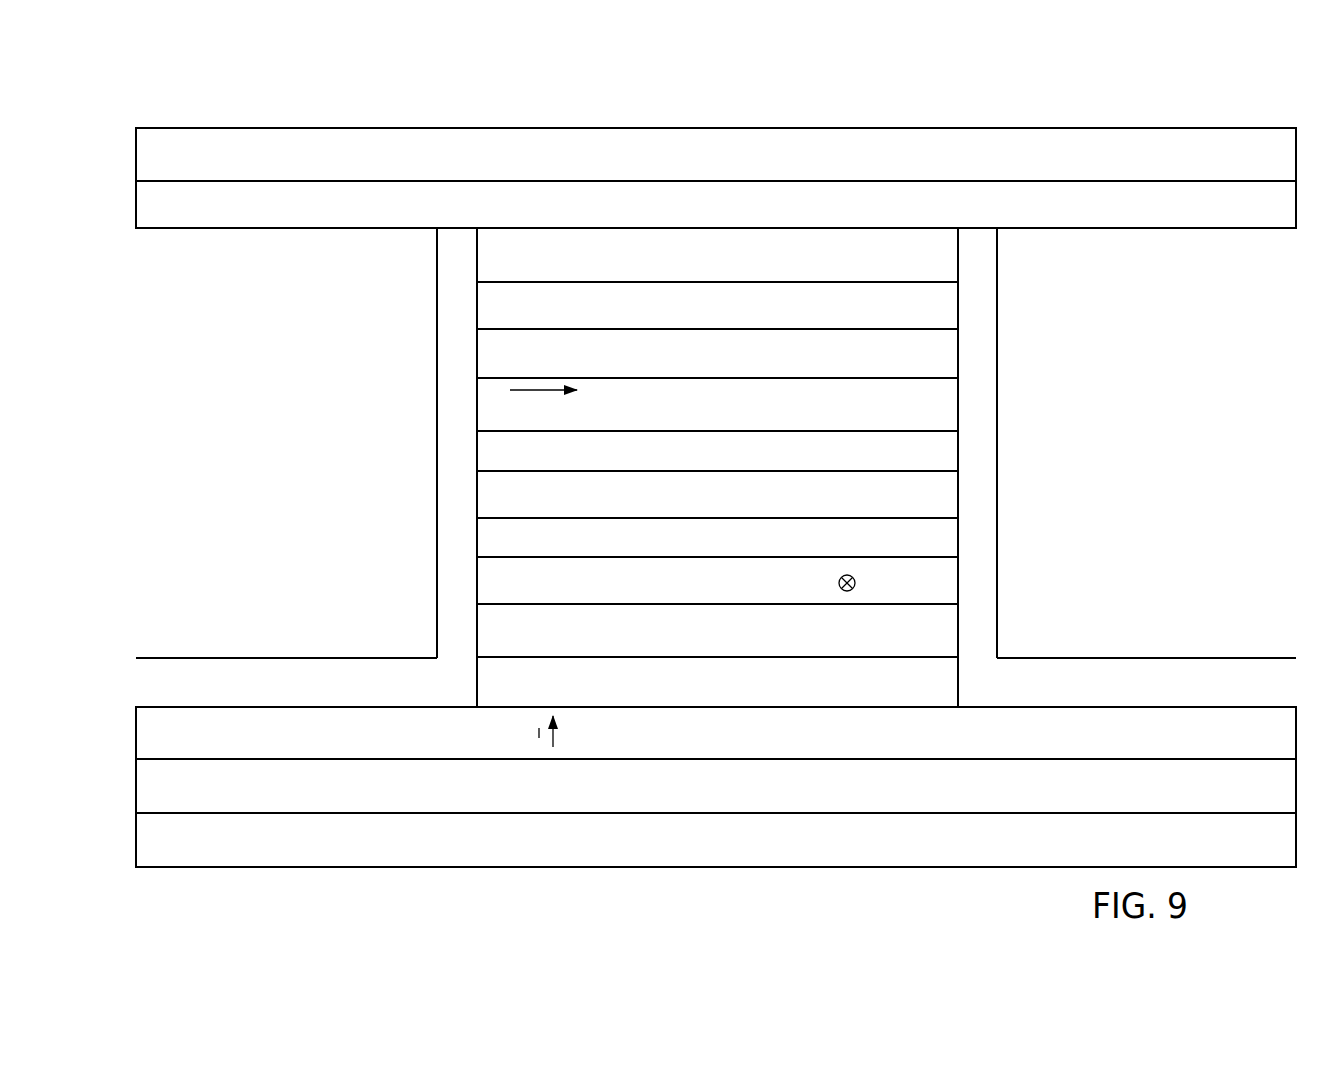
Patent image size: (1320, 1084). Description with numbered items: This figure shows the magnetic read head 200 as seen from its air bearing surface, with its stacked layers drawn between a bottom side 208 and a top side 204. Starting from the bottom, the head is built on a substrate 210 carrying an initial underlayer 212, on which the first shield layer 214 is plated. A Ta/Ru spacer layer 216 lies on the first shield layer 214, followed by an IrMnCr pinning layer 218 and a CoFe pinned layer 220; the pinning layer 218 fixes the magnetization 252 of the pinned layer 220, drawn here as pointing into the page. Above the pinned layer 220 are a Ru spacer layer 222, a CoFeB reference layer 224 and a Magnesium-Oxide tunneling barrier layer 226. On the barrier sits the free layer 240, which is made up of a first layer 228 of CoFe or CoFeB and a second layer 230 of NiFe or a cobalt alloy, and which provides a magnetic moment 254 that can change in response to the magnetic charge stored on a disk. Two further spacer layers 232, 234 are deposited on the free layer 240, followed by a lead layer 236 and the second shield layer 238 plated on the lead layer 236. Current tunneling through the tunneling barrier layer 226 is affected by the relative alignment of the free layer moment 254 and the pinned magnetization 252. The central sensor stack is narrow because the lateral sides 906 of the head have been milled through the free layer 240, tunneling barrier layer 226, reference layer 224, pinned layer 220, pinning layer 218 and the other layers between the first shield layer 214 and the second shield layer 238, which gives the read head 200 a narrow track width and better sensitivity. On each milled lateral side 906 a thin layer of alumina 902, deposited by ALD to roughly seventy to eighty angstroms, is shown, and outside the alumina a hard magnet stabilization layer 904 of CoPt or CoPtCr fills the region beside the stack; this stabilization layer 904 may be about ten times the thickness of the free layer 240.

The magnetic read head 200 is at (684, 499).
The top side 204 is at (716, 157).
The bottom side 208 is at (716, 809).
The substrate 210 is at (734, 850).
The initial underlayer 212 is at (734, 797).
The first shield layer 214 is at (734, 744).
The Ta/Ru spacer layer 216 is at (734, 693).
The pinning layer 218 is at (734, 640).
The pinned layer 220 is at (734, 594).
The Ru spacer layer 222 is at (734, 552).
The reference layer 224 is at (734, 506).
The tunneling barrier layer 226 is at (734, 464).
The first layer of free layer 228 is at (734, 417).
The second layer of free layer 230 is at (734, 366).
The spacer layer 232 is at (734, 319).
The spacer layer 234 is at (734, 270).
The lead layer 236 is at (734, 217).
The second shield layer 238 is at (734, 167).
The free layer 240 is at (659, 467).
The magnetization of pinned layer 252 is at (872, 584).
The magnetic moment of free layer 254 is at (543, 406).
The alumina layer 902 is at (329, 694).
The hard magnet stabilization layer 904 is at (215, 500).
The lateral sides 906 is at (475, 348).